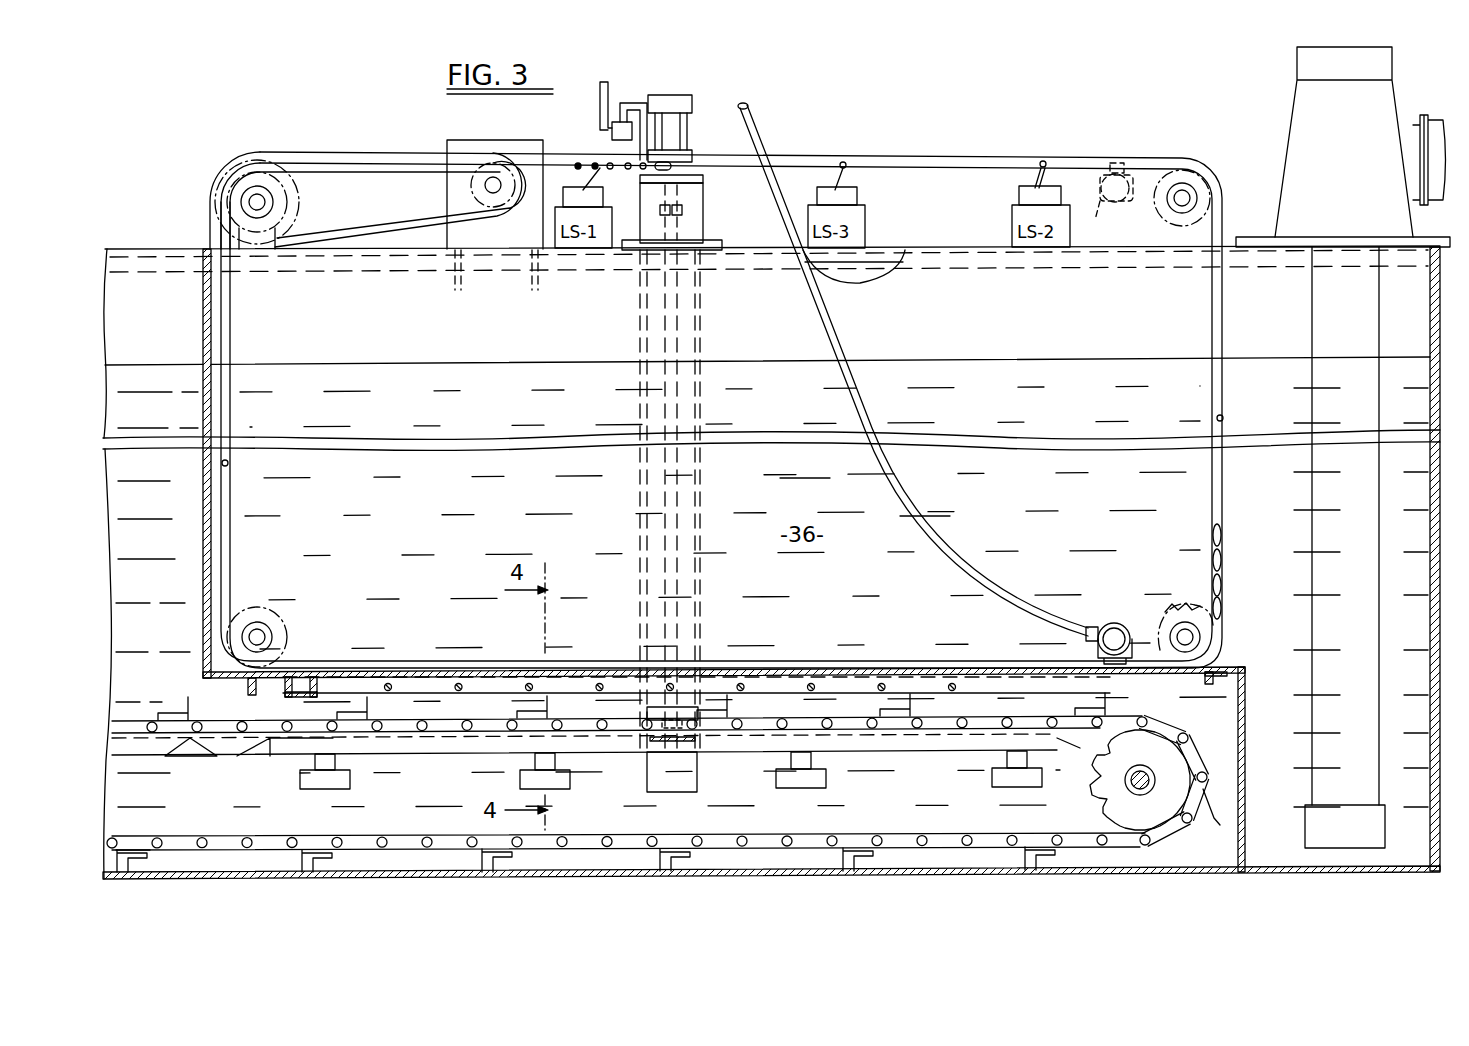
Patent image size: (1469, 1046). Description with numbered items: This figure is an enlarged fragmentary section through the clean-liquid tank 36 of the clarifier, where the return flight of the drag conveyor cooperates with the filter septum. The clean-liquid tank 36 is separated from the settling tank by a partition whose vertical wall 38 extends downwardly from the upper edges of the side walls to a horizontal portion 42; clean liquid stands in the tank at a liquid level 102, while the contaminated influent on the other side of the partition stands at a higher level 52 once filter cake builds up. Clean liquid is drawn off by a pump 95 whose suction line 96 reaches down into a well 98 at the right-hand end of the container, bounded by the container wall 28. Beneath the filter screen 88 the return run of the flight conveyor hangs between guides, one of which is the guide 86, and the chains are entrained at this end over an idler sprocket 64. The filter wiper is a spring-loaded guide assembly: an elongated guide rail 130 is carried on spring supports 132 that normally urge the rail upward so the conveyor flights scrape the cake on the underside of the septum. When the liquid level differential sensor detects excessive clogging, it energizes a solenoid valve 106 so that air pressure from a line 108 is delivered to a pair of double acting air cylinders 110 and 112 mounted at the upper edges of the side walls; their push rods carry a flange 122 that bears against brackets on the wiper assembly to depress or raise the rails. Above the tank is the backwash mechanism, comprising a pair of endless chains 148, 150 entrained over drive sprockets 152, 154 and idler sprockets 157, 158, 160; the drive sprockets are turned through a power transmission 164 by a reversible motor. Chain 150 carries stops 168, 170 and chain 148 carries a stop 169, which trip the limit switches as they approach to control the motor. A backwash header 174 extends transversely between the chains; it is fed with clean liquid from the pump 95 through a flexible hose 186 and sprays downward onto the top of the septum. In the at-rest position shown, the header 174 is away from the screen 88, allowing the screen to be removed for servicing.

The outer tank 28 is at (1430, 550).
The vertical wall 38 is at (205, 580).
The clean-liquid tank 36 is at (865, 497).
The horizontal portion 42 is at (248, 688).
The level 52 is at (160, 364).
The idler sprocket 64 is at (1128, 787).
The guide 86 is at (152, 746).
The screen 88 is at (805, 680).
The pump 95 is at (1360, 188).
The suction line 96 is at (1315, 686).
The well 98 is at (1340, 850).
The liquid level 102 is at (403, 352).
The solenoid valve 106 is at (612, 132).
The line 108 is at (612, 95).
The double acting air cylinder 110 is at (672, 212).
The double acting air cylinder 112 is at (678, 103).
The flange 122 is at (702, 588).
The guide rail 130 is at (415, 746).
The spring support 132 is at (350, 780).
The endless chain 148 is at (982, 165).
The endless chain 150 is at (726, 384).
The drive sprocket 152 is at (257, 204).
The drive sprocket 154 is at (300, 205).
The idler sprocket 157 is at (1182, 178).
The idler sprocket 158 is at (1187, 620).
The idler sprocket 160 is at (290, 642).
The power transmission 164 is at (362, 152).
The stop 168 is at (1046, 163).
The stop 169 is at (855, 165).
The stop 170 is at (229, 463).
The backwash header 174 is at (1114, 625).
The flexible hose 186 is at (830, 348).